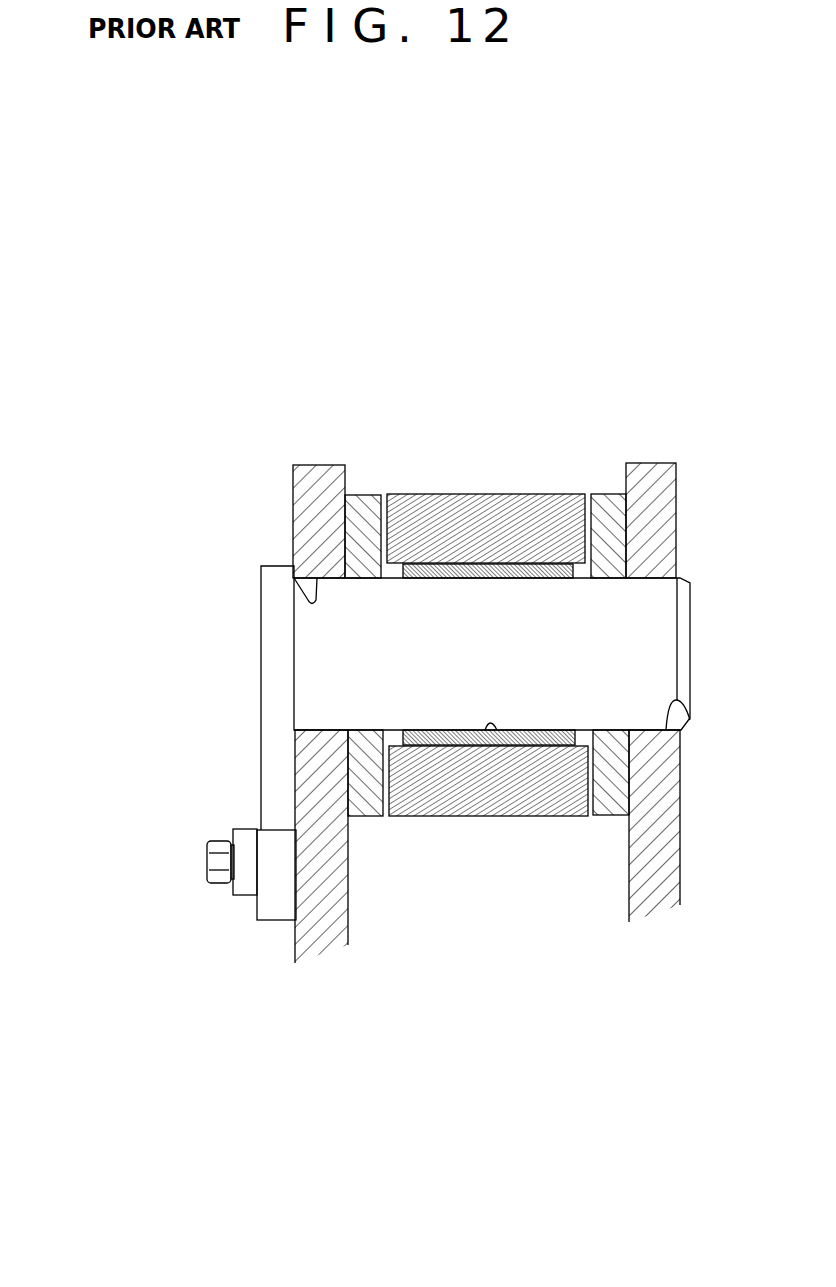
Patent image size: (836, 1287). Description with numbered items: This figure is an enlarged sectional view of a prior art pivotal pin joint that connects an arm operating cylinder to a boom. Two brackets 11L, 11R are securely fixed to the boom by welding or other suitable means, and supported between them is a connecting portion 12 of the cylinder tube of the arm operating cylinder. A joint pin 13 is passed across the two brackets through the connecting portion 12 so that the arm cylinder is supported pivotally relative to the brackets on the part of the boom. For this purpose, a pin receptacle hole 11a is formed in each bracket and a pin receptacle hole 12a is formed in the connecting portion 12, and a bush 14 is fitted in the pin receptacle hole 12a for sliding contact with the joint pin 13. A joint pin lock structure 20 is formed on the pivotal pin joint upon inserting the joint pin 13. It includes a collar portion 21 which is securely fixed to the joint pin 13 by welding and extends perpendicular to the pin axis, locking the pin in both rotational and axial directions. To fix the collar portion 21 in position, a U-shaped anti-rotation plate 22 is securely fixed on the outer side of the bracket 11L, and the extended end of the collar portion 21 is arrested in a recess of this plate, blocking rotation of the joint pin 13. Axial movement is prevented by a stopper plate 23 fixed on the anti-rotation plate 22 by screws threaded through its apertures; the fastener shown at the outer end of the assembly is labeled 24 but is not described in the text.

The bracket 11L is at (320, 480).
The bracket 11R is at (652, 495).
The pin receptacle hole 11a is at (312, 600).
The connecting portion 12 is at (436, 512).
The pin receptacle hole 12a is at (492, 722).
The joint pin 13 is at (439, 680).
The bush 14 is at (540, 572).
The joint pin lock structure 20 is at (199, 846).
The collar portion 21 is at (267, 645).
The U-shaped anti-rotation plate 22 is at (272, 910).
The stopper plate 23 is at (243, 890).
The nut 24 is at (213, 860).